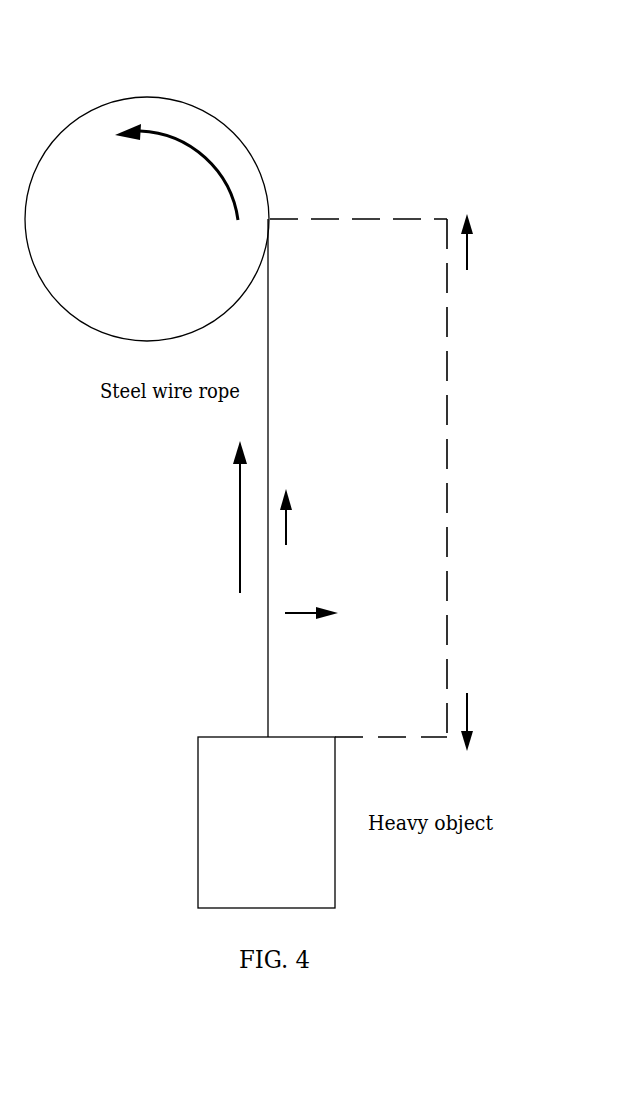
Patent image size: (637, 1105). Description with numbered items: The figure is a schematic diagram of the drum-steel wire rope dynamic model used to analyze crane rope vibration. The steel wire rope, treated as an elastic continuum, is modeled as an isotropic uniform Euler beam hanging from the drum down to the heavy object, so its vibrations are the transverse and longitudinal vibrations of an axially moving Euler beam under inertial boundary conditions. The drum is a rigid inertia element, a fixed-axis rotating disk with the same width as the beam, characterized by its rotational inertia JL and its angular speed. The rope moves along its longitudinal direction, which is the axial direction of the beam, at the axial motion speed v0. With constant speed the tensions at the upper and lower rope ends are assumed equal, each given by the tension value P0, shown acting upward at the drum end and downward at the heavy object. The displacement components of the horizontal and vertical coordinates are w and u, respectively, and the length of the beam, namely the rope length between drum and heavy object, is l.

The rotational inertia of the drum JL is at (147, 186).
The tension value P0 is at (393, 482).
The length of the Euler beam l is at (463, 478).
The axial motion speed of the Euler beam v0 is at (222, 517).
The vertical displacement component u is at (302, 517).
The horizontal displacement component w is at (311, 628).